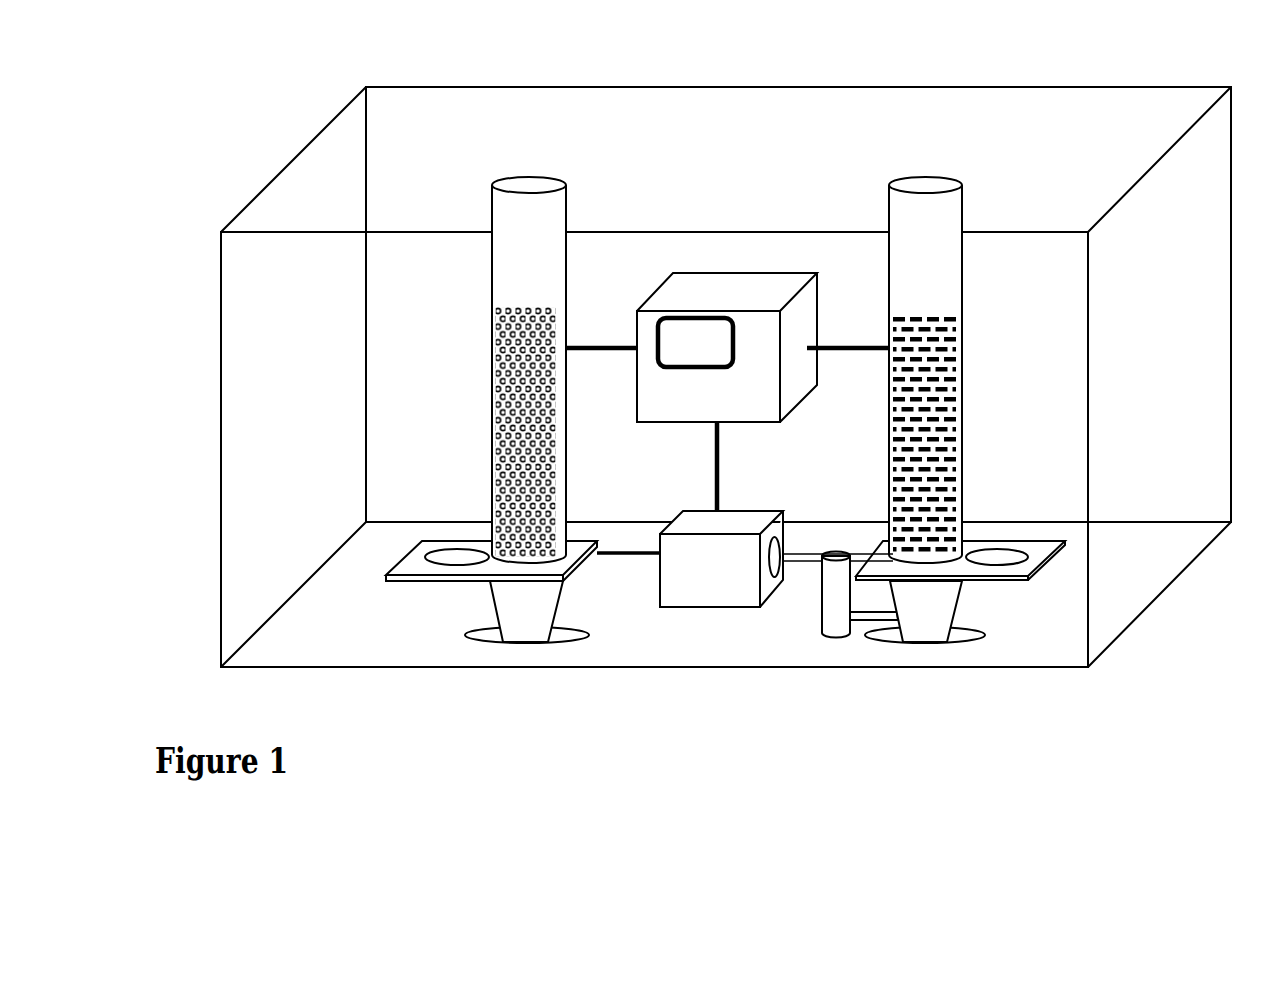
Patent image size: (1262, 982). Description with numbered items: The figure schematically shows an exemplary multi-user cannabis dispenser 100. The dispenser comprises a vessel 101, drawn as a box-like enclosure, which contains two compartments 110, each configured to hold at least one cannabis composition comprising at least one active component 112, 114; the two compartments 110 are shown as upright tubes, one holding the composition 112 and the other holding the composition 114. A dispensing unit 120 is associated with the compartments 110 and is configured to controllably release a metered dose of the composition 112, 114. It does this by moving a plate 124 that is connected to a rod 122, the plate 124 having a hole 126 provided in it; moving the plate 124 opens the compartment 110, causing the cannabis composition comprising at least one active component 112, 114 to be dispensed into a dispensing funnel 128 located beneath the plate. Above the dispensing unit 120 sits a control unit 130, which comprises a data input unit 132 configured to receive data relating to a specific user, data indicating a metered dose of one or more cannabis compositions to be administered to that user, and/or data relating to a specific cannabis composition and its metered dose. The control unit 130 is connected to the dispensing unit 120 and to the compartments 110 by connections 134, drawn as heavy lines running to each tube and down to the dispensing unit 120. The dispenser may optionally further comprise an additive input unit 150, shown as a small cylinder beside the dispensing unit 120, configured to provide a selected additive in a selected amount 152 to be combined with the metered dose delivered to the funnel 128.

The multi-user cannabis dispenser 100 is at (738, 425).
The vessel 101 is at (1198, 577).
The compartments 110 is at (733, 360).
The cannabis composition comprising at least one active component 112 is at (520, 382).
The cannabis composition comprising at least one active component 114 is at (963, 372).
The dispensing unit 120 is at (693, 593).
The rod 122 is at (810, 547).
The plate 124 is at (1042, 545).
The hole 126 is at (1000, 568).
The dispensing funnel 128 is at (928, 610).
The control unit 130 is at (734, 332).
The data input unit 132 is at (690, 343).
The connections 134 is at (617, 355).
The additive input unit 150 is at (820, 593).
The selected additive in a selected amount 152 is at (880, 617).